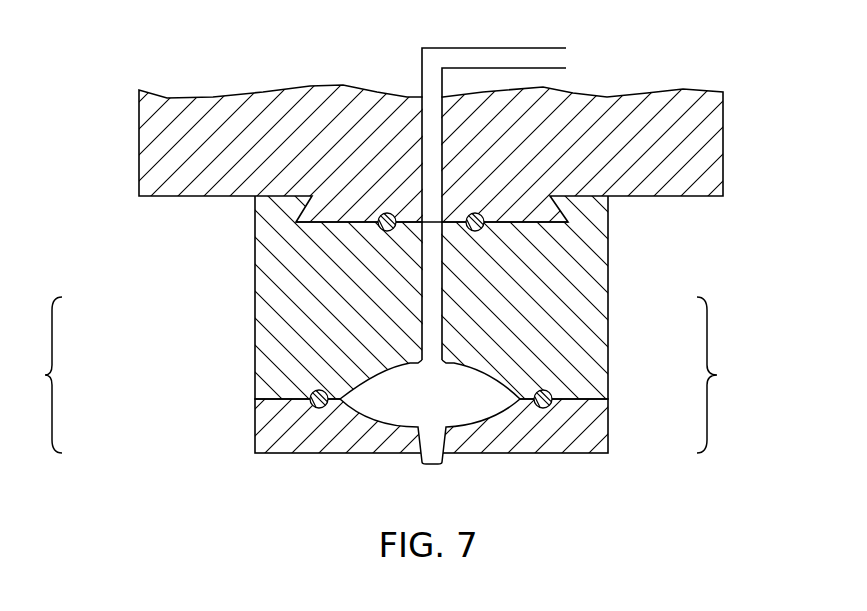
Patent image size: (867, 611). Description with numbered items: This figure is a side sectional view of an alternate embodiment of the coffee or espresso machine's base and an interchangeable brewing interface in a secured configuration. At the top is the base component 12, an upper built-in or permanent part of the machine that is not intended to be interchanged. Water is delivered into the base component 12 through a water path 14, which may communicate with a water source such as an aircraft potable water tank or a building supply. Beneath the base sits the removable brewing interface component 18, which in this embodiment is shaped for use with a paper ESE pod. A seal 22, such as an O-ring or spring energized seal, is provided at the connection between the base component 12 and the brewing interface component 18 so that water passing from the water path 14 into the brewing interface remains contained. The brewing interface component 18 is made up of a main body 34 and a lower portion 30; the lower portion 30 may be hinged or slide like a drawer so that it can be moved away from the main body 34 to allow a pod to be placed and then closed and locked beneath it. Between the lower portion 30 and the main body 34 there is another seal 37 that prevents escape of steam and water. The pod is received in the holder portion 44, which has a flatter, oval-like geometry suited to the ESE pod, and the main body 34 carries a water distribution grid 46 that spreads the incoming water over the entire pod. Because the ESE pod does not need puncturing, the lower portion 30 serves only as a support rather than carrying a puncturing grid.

The base component 12 is at (95, 173).
The water path 14 is at (507, 57).
The brewing interface component 18 is at (378, 375).
The seal 22 is at (478, 216).
The lower portion 30 is at (230, 403).
The main body 34 is at (280, 271).
The seal 37 is at (311, 391).
The holder portion 44 is at (475, 392).
The water distribution grid 46 is at (471, 373).